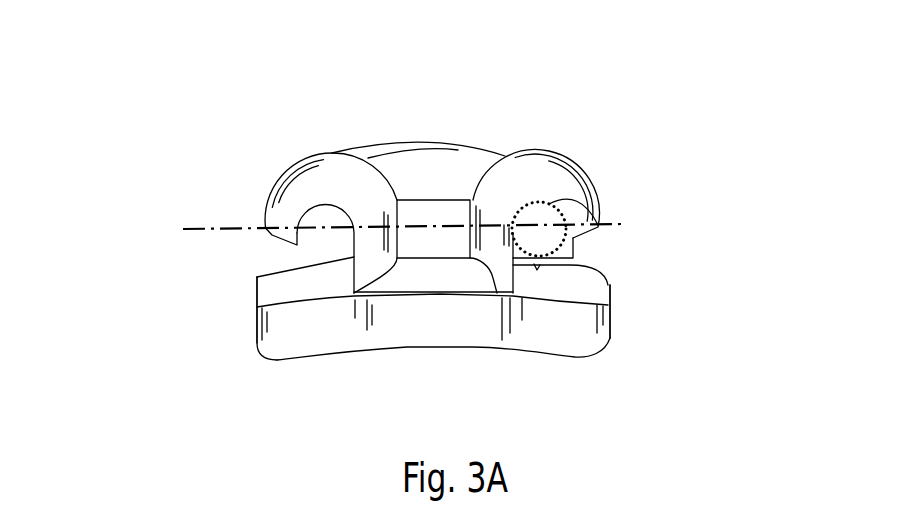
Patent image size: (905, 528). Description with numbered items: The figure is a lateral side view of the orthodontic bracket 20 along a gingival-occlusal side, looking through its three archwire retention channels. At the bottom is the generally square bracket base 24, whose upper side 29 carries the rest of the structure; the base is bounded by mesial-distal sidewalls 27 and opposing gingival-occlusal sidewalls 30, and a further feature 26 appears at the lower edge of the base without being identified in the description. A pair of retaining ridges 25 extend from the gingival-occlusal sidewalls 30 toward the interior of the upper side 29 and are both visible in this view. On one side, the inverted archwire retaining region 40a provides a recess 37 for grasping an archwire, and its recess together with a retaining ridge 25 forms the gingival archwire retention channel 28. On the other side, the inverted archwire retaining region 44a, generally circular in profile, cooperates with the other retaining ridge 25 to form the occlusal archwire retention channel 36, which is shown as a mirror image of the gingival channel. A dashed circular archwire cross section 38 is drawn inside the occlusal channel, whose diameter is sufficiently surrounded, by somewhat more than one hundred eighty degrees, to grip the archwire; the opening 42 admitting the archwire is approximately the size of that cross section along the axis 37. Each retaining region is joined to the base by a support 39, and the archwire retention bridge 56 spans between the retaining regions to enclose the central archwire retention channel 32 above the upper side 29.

The bracket 20 is at (435, 129).
The bracket base 24 is at (448, 344).
The retaining ridges 25 is at (278, 268).
The bottom bonding surface of base 26 is at (463, 347).
The mesial-distal sidewalls 27 is at (328, 327).
The gingival archwire retention channel 28 is at (325, 233).
The upper side 29 is at (612, 328).
The gingival-occlusal sidewalls 30 is at (257, 323).
The archwire retention channel 32 is at (423, 242).
The occlusal archwire retention channel 36 is at (537, 223).
The recess 37 is at (326, 200).
The archwire cross section 38 is at (508, 248).
The support 39 is at (537, 272).
The inverted archwire retaining region 40a is at (297, 182).
The opening 42 is at (587, 249).
The inverted archwire retaining region 44a is at (533, 168).
The archwire retention bridge 56 is at (418, 157).